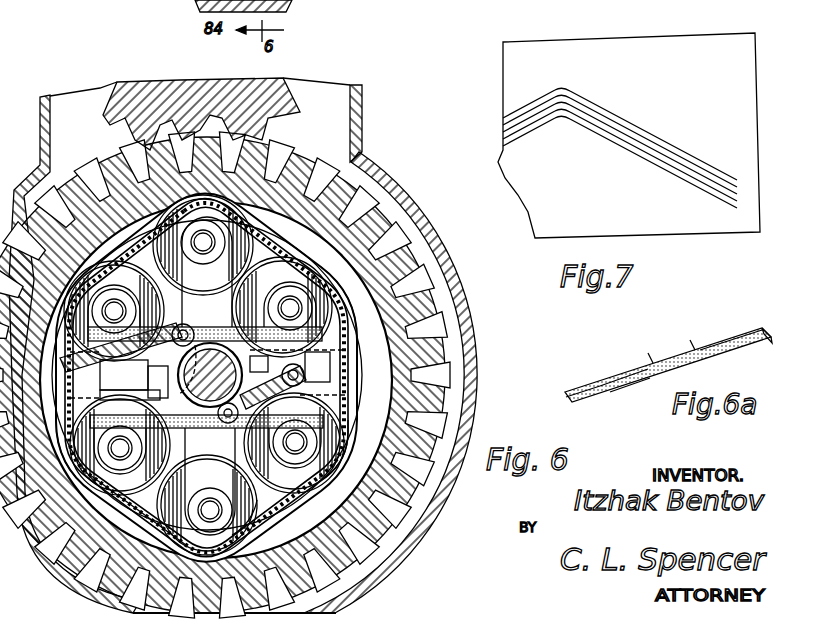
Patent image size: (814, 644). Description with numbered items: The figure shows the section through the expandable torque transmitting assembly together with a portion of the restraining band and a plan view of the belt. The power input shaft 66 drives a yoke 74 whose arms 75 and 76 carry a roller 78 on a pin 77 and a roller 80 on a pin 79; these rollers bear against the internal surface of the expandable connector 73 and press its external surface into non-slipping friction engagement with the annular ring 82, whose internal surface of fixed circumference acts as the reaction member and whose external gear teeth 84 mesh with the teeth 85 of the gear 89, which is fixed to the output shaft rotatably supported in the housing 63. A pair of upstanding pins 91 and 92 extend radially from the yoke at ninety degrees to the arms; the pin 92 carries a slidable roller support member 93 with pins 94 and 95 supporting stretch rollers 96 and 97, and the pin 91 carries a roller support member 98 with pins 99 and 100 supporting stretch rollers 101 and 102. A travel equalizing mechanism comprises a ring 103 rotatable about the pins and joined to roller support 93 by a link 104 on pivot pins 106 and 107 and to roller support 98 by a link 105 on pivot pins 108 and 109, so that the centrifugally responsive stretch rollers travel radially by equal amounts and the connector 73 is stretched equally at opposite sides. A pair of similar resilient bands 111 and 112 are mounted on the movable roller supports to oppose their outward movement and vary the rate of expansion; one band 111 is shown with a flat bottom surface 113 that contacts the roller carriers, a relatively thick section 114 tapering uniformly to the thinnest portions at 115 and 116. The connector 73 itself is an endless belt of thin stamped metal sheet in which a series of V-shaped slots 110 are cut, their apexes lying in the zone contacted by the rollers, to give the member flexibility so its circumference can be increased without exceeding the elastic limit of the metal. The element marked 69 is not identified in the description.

In FIG. 6, the housing 63 is at (362, 131).
In FIG. 6, the power input shaft 66 is at (195, 400).
In FIG. 6, the gear body 69 is at (366, 478).
In FIG. 6, the expandable connector 73 is at (356, 308).
In FIG. 7, the expandable connector 73 is at (713, 47).
In FIG. 6, the yoke 74 is at (295, 455).
In FIG. 6, the arm 75 is at (290, 308).
In FIG. 6, the arm 76 is at (222, 525).
In FIG. 6, the pin 77 is at (203, 238).
In FIG. 6, the roller 78 is at (280, 302).
In FIG. 6, the pin 79 is at (232, 520).
In FIG. 6, the roller 80 is at (222, 500).
In FIG. 6, the annular ring 82 is at (420, 497).
In FIG. 6, the gear teeth 84 is at (333, 195).
In FIG. 6, the teeth 85 is at (337, 500).
In FIG. 6, the gear 89 is at (108, 120).
In FIG. 6, the upstanding pin 91 is at (258, 428).
In FIG. 6, the upstanding pin 92 is at (130, 446).
In FIG. 6, the roller support member 93 is at (65, 432).
In FIG. 6, the pin 94 is at (114, 311).
In FIG. 6, the pin 95 is at (140, 452).
In FIG. 6, the stretch roller 96 is at (112, 262).
In FIG. 6, the stretch roller 97 is at (68, 450).
In FIG. 6, the roller support member 98 is at (357, 400).
In FIG. 6, the pin 99 is at (290, 236).
In FIG. 6, the pin 100 is at (330, 448).
In FIG. 6, the stretch roller 101 is at (346, 310).
In FIG. 6, the stretch roller 102 is at (352, 440).
In FIG. 6, the ring 103 is at (228, 340).
In FIG. 6, the link 104 is at (200, 300).
In FIG. 6, the link 105 is at (300, 392).
In FIG. 6, the pivot pin 106 is at (198, 326).
In FIG. 6, the pivot pin 107 is at (102, 375).
In FIG. 6, the pivot pin 108 is at (226, 420).
In FIG. 6, the pivot pin 109 is at (293, 365).
In FIG. 7, the slots 110 is at (634, 136).
In FIG. 6, the resilient band 111 is at (110, 366).
In FIG. 6A, the resilient band 111 is at (648, 353).
In FIG. 6, the resilient band 112 is at (130, 400).
In FIG. 6A, the flat bottom surface 113 is at (646, 382).
In FIG. 6A, the thick section 114 is at (688, 345).
In FIG. 6A, the thinnest portion 115 is at (764, 342).
In FIG. 6A, the thinnest portion 116 is at (606, 392).